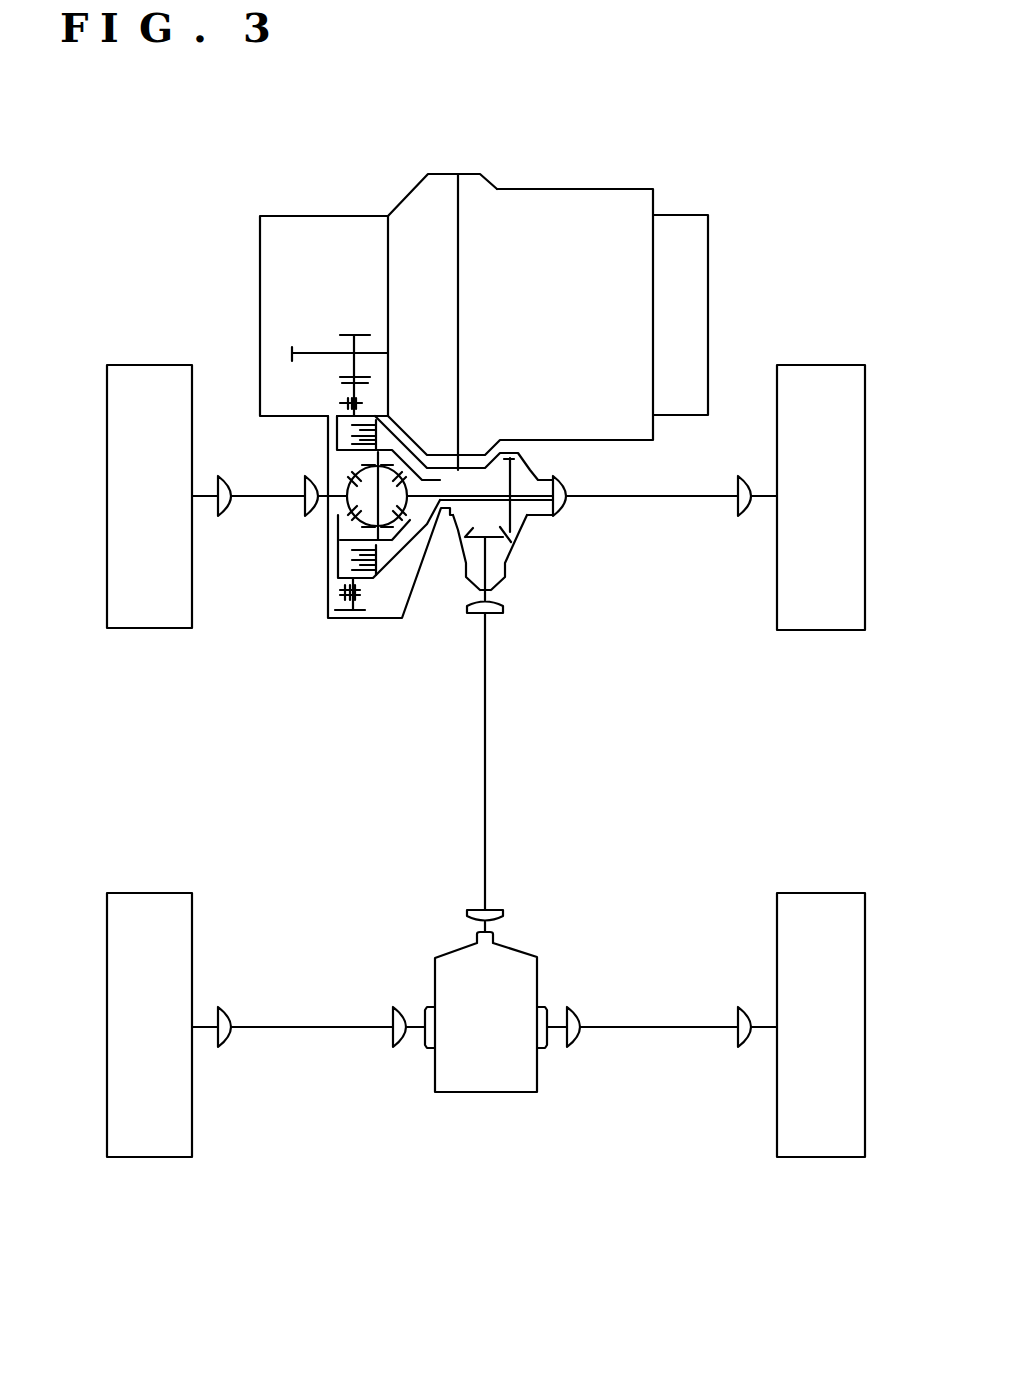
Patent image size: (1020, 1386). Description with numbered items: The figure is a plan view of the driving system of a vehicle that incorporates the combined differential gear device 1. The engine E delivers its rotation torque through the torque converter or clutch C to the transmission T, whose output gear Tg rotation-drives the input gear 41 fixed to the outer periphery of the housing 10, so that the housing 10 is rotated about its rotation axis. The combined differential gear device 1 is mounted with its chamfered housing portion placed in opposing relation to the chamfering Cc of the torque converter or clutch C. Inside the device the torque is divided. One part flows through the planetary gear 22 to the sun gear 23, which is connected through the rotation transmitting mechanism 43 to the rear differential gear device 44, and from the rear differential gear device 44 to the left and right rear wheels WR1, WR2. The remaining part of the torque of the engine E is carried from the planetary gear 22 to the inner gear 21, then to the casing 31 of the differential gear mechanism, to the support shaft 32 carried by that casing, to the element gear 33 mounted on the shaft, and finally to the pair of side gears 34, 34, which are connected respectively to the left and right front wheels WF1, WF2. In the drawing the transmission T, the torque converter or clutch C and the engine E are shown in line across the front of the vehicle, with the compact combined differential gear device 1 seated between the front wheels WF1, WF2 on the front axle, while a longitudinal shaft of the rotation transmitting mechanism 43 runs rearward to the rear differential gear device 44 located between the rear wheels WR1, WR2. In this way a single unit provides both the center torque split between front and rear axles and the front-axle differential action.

The transmission T is at (323, 243).
The output gear Tg is at (345, 333).
The chamfering Cc is at (402, 195).
The torque converter or clutch C is at (430, 215).
The engine E is at (578, 225).
The input gear 41 is at (340, 393).
The housing 10 is at (328, 598).
The combined differential gear device 1 is at (340, 621).
The element gear 33 is at (348, 468).
The planetary gear 22 is at (348, 566).
The inner gear 21 is at (368, 590).
The support shaft 32 is at (375, 493).
The casing 31 is at (342, 533).
The side gears 34 is at (342, 522).
The sun gear 23 is at (404, 540).
The rotation transmitting mechanism 43 is at (512, 553).
The rear differential gear device 44 is at (540, 985).
The left front wheel WF1 is at (137, 365).
The right front wheel WF2 is at (813, 365).
The left rear wheel WR1 is at (143, 1158).
The right rear wheel WR2 is at (810, 1158).